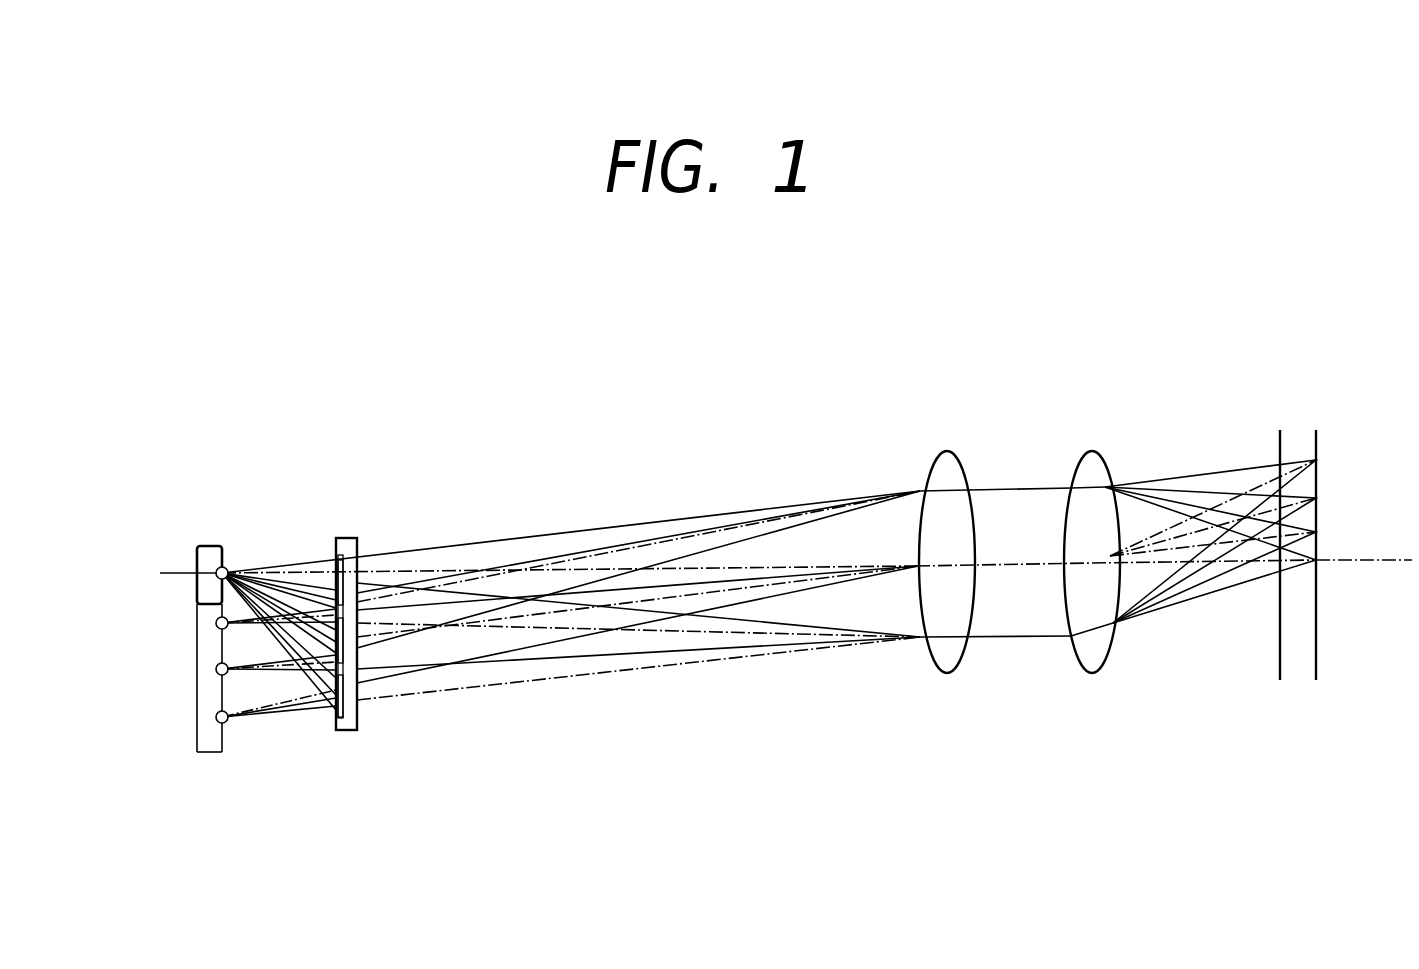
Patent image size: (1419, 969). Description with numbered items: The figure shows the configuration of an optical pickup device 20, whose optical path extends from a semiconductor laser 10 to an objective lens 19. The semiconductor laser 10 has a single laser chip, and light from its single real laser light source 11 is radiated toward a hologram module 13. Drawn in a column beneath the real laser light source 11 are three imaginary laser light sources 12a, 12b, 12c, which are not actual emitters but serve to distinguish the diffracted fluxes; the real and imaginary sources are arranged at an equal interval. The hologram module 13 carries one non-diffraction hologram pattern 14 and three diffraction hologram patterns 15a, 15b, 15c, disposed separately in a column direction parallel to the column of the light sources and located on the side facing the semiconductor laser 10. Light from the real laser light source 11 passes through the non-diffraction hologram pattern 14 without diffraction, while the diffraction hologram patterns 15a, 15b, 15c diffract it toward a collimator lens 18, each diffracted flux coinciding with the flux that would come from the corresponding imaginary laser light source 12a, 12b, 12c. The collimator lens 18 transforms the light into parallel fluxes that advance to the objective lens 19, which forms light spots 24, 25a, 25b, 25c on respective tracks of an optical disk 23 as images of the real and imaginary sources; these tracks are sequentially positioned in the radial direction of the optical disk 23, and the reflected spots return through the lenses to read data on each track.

The semiconductor laser 10 is at (215, 541).
The real laser light source 11 is at (216, 570).
The imaginary laser light source 12a is at (216, 623).
The imaginary laser light source 12b is at (216, 670).
The imaginary laser light source 12c is at (216, 719).
The hologram module 13 is at (346, 538).
The non-diffraction hologram pattern 14 is at (356, 565).
The diffraction hologram pattern 15a is at (358, 610).
The diffraction hologram pattern 15b is at (358, 657).
The diffraction hologram pattern 15c is at (358, 722).
The collimator lens 18 is at (963, 462).
The objective lens 19 is at (1090, 452).
The optical pickup device 20 is at (726, 351).
The optical disk 23 is at (1297, 431).
The light spot 24 is at (1322, 565).
The light spot 25a is at (1318, 532).
The light spot 25b is at (1318, 498).
The light spot 25c is at (1318, 458).